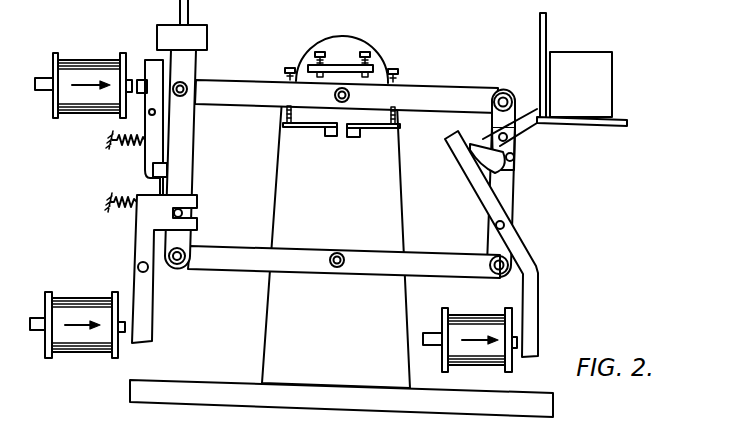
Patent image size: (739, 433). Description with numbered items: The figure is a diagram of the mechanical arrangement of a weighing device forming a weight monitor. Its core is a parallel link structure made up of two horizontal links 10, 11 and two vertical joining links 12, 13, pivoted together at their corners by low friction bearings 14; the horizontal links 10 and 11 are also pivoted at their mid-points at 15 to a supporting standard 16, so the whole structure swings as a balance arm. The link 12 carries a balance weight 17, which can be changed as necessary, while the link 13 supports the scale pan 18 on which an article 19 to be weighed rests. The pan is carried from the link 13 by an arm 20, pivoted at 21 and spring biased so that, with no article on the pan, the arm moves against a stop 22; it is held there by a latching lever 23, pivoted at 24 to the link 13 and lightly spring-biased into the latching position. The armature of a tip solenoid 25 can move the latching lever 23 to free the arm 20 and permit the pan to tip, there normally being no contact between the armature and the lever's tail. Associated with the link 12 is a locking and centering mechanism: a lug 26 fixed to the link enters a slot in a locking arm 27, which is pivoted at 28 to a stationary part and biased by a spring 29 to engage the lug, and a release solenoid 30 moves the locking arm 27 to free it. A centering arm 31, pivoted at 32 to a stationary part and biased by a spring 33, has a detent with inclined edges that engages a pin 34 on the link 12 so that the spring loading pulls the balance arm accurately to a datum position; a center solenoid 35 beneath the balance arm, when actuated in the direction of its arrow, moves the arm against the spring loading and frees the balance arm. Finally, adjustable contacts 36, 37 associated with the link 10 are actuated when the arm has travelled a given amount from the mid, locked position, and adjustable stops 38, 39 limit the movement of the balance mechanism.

The horizontal link 10 is at (448, 87).
The horizontal link 11 is at (247, 247).
The vertical joining link 12 is at (193, 141).
The vertical joining link 13 is at (515, 198).
The low friction bearings 14 is at (186, 85).
The mid-point pivots 15 is at (350, 95).
The supporting standard 16 is at (403, 212).
The balance weight 17 is at (207, 30).
The scale pan 18 is at (547, 28).
The article 19 is at (607, 65).
The arm 20 is at (543, 128).
The pivot 21 is at (515, 157).
The stop 22 is at (513, 162).
The latching lever 23 is at (530, 246).
The pivot 24 is at (505, 228).
The tip solenoid 25 is at (500, 364).
The lug 26 is at (150, 173).
The locking arm 27 is at (148, 60).
The pivot 28 is at (156, 113).
The spring 29 is at (110, 140).
The release solenoid 30 is at (102, 60).
The centering arm 31 is at (133, 238).
The pivot 32 is at (139, 270).
The spring 33 is at (109, 202).
The pin 34 is at (192, 212).
The center solenoid 35 is at (93, 348).
The adjustable contact 36 is at (283, 125).
The adjustable contact 37 is at (458, 136).
The adjustable stop 38 is at (308, 67).
The adjustable stop 39 is at (373, 63).